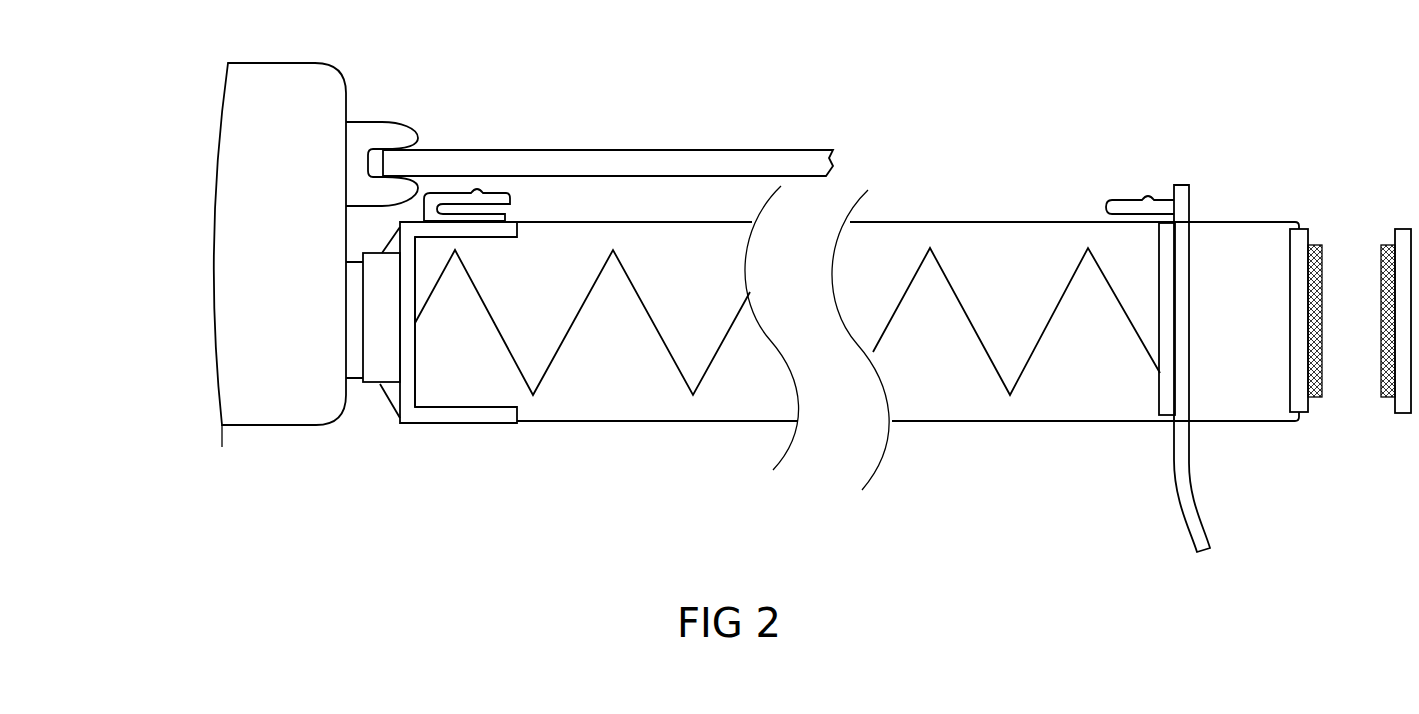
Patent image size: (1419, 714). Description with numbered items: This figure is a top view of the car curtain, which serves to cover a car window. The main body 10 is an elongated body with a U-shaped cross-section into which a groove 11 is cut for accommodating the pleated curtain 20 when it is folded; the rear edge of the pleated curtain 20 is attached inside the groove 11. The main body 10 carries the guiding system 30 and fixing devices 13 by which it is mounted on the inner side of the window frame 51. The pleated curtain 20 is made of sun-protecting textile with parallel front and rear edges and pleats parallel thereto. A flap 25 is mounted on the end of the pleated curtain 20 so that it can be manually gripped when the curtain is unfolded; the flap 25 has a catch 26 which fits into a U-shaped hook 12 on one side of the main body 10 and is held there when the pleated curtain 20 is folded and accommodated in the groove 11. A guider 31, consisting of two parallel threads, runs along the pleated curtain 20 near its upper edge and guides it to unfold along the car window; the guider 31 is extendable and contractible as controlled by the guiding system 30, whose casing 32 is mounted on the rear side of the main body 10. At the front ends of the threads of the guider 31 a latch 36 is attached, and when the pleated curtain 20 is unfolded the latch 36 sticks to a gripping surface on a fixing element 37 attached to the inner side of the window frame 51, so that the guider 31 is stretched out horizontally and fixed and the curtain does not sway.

The main body 10 is at (447, 413).
The groove 11 is at (457, 353).
The U-shaped hook 12 is at (493, 192).
The fixing device 13 is at (357, 337).
The pleated curtain 20 is at (682, 383).
The flap 25 is at (1183, 488).
The catch 26 is at (1125, 207).
The guiding system 30 is at (368, 392).
The guider 31 is at (1015, 222).
The casing 32 is at (383, 299).
The latch 36 is at (1299, 238).
The fixing element 37 is at (1401, 230).
The window frame 51 is at (253, 388).